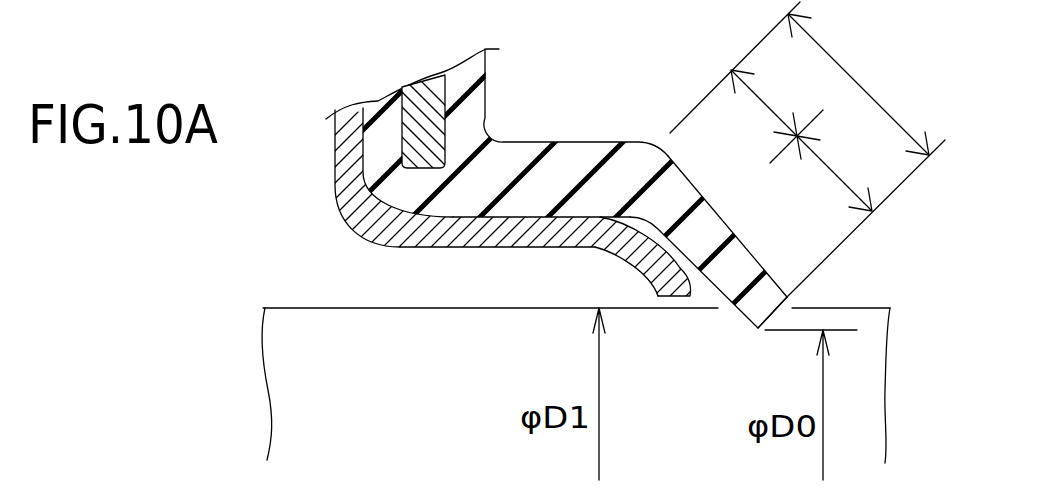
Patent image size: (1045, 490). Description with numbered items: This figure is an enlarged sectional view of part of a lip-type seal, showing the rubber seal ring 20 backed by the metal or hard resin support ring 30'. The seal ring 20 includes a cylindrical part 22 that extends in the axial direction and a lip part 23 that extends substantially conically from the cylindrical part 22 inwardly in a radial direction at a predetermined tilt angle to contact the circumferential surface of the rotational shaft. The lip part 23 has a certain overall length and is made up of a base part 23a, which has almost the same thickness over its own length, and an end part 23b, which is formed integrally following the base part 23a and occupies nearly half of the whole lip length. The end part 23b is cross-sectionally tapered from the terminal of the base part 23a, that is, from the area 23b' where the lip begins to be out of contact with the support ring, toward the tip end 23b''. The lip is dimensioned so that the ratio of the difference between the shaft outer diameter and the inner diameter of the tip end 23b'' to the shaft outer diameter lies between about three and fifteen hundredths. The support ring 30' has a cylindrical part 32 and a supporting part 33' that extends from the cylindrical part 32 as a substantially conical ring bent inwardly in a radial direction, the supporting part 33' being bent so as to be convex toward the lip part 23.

The seal ring 20 is at (517, 135).
The cylindrical part 22 is at (556, 170).
The lip part 23 is at (787, 165).
The base part 23a is at (673, 190).
The end part 23b is at (806, 197).
The support ring 30' is at (569, 205).
The cylindrical part 32 is at (468, 238).
The supporting part 33' is at (601, 292).
The area 23b' is at (651, 331).
The tip end 23b'' is at (719, 367).